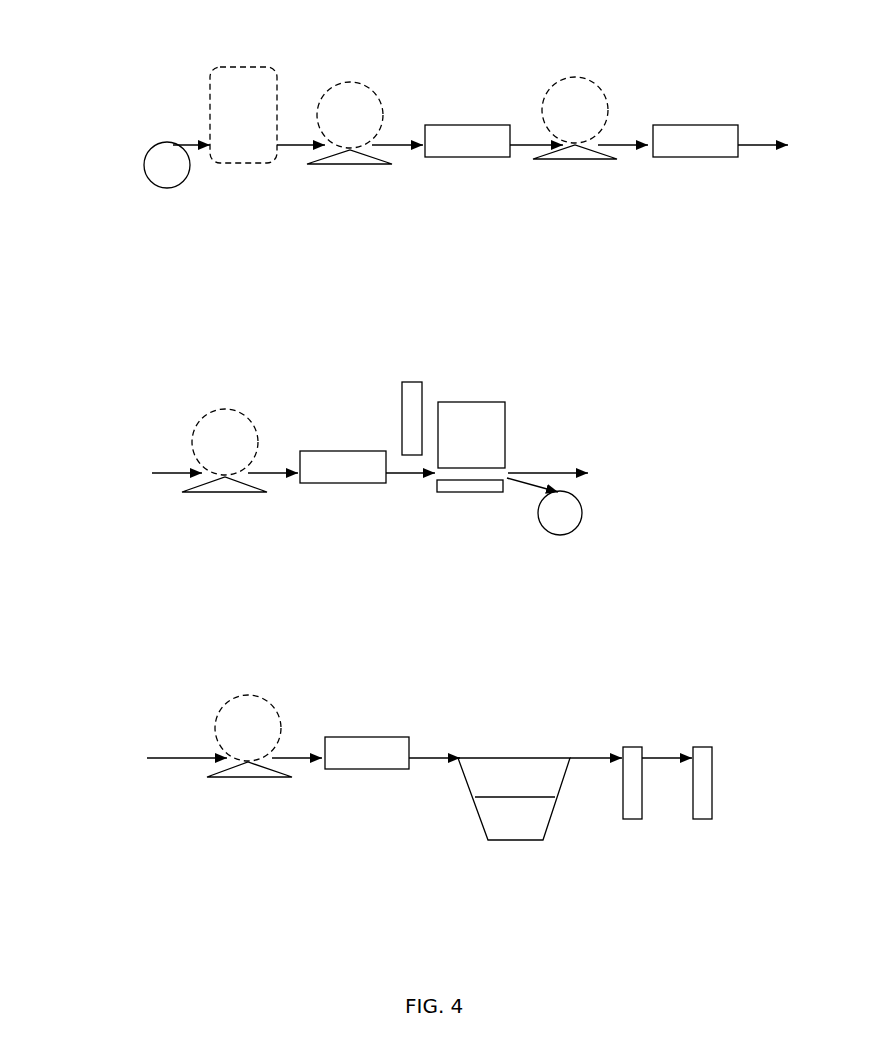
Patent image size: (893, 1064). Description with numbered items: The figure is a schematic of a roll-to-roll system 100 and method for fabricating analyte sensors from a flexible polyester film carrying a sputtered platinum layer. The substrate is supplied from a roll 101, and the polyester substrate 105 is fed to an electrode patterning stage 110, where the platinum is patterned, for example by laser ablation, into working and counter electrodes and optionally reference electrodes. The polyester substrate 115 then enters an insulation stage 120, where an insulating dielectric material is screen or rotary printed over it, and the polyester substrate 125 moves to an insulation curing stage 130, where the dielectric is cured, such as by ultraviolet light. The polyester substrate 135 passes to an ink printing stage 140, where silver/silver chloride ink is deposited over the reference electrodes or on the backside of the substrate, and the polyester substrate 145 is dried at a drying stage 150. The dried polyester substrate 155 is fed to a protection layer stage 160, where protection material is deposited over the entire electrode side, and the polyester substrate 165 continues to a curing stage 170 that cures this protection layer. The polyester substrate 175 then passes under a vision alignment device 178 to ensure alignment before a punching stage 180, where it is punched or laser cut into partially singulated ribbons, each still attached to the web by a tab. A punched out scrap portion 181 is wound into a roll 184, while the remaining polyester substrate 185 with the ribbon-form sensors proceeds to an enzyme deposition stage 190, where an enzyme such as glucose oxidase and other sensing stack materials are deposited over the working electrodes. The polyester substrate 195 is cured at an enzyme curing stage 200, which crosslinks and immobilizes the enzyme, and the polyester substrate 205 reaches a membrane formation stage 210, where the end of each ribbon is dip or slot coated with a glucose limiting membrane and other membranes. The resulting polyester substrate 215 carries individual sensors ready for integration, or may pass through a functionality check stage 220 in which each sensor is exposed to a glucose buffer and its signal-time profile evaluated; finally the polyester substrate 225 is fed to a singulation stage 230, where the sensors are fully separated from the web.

The system 100 is at (97, 918).
The roll 101 is at (165, 188).
The polyester substrate 105 is at (187, 142).
The electrode patterning stage 110 is at (245, 163).
The polyester substrate 115 is at (297, 142).
The insulation stage 120 is at (350, 164).
The polyester substrate 125 is at (395, 140).
The insulation curing stage 130 is at (472, 157).
The polyester substrate 135 is at (527, 140).
The ink printing stage 140 is at (575, 159).
The polyester substrate 145 is at (630, 137).
The drying stage 150 is at (700, 157).
The polyester substrate 155 is at (758, 140).
The protection layer stage 160 is at (225, 492).
The polyester substrate 165 is at (278, 472).
The curing stage 170 is at (348, 483).
The polyester substrate 175 is at (395, 470).
The vision alignment device 178 is at (413, 380).
The punching stage 180 is at (480, 402).
The scrap portion 181 is at (527, 485).
The roll 184 is at (577, 527).
The remaining polyester substrate 185 is at (552, 472).
The enzyme deposition stage 190 is at (247, 777).
The polyester substrate 195 is at (302, 757).
The enzyme curing stage 200 is at (367, 769).
The polyester substrate 205 is at (432, 757).
The membrane formation stage 210 is at (510, 840).
The polyester substrate 215 is at (597, 757).
The functionality check stage 220 is at (637, 819).
The polyester substrate 225 is at (667, 757).
The singulation stage 230 is at (705, 819).